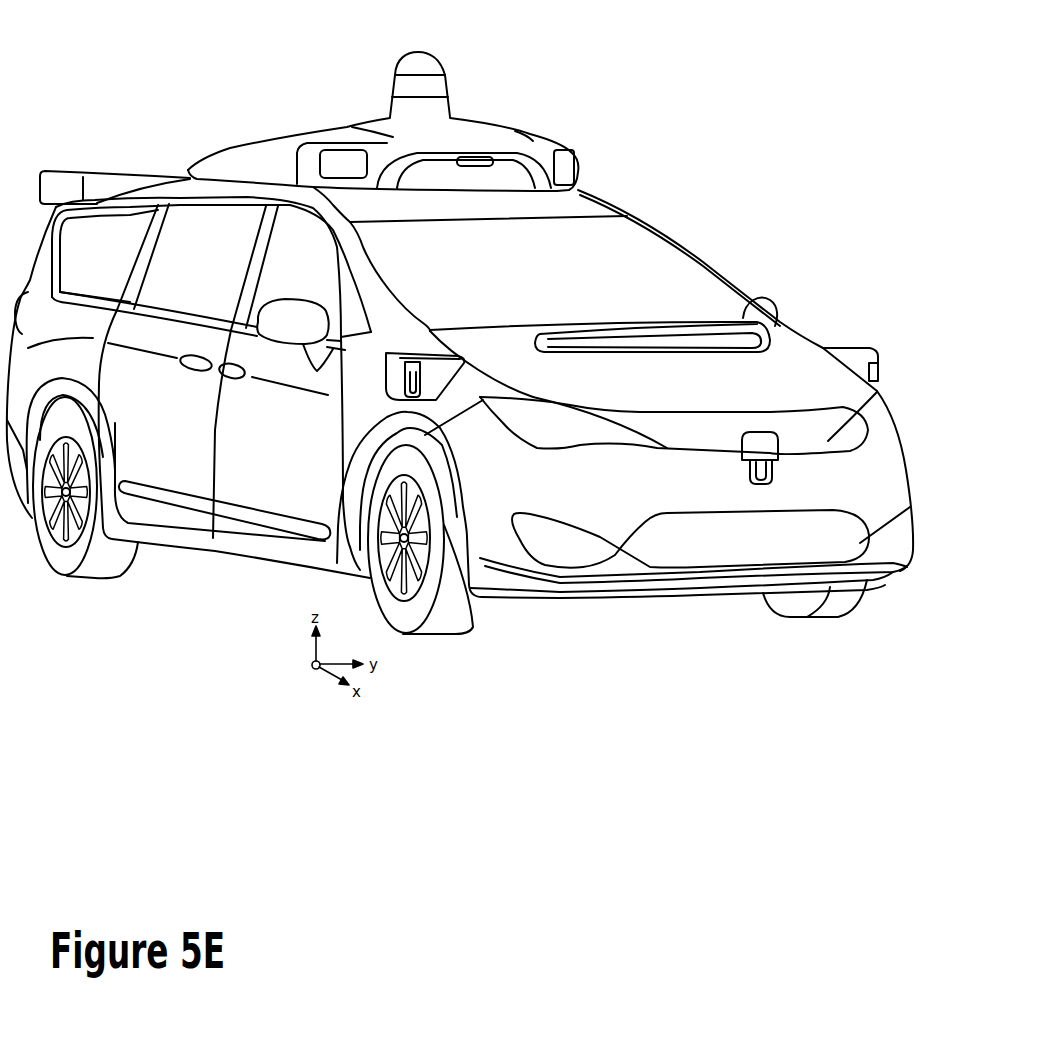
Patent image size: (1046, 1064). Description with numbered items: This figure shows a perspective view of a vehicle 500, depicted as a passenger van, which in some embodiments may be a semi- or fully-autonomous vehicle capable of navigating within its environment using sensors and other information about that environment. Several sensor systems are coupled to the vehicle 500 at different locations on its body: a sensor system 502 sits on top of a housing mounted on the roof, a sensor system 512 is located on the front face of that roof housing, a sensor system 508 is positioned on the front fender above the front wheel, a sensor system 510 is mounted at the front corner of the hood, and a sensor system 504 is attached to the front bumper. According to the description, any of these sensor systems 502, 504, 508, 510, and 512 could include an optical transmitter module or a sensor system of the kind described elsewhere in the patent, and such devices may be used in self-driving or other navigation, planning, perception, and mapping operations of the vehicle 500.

The vehicle 500 is at (728, 88).
The sensor system 502 is at (440, 62).
The sensor system 504 is at (757, 482).
The sensor system 508 is at (403, 395).
The sensor system 510 is at (874, 380).
The sensor system 512 is at (478, 166).